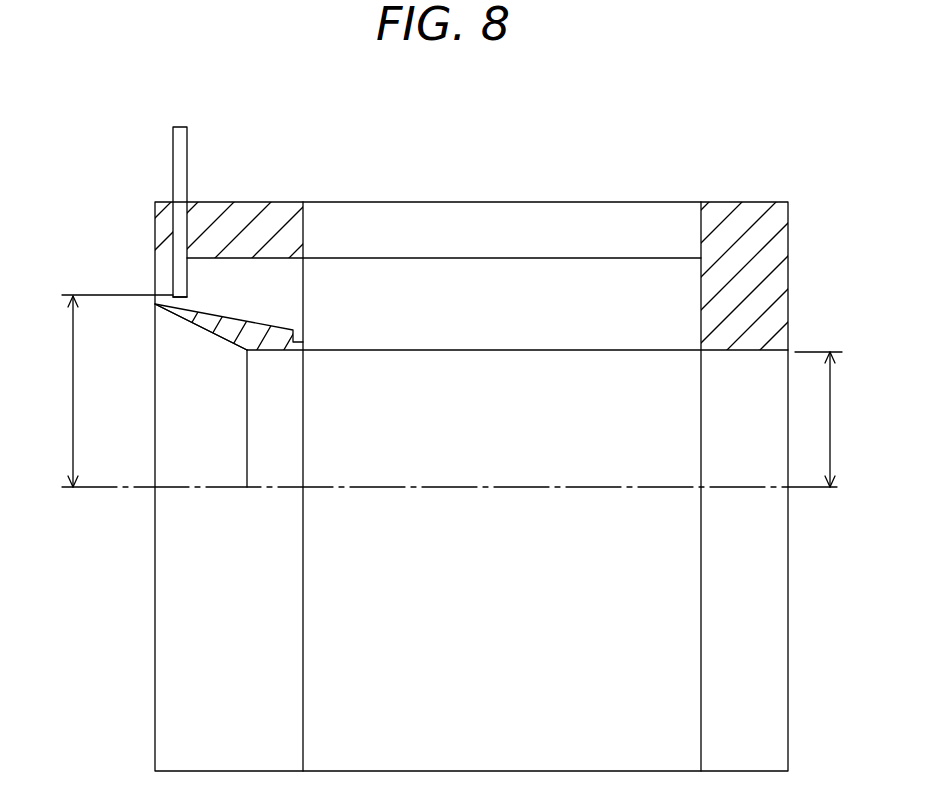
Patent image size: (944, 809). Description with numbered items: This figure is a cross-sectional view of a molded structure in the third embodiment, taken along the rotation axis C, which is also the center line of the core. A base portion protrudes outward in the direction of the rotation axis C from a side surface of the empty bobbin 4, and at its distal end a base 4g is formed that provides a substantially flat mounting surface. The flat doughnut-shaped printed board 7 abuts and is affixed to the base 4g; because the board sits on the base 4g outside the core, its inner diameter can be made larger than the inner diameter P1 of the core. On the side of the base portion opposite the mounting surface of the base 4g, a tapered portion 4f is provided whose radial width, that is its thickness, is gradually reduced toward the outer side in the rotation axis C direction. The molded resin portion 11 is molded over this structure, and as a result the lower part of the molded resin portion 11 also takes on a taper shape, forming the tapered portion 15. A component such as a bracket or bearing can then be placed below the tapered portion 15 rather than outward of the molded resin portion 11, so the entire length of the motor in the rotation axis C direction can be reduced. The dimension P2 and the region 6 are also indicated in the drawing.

The empty bobbin 4 is at (257, 262).
The tapered portion 4f is at (228, 318).
The base 4g is at (178, 297).
The cylinder bore 6 is at (487, 212).
The printed board 7 is at (172, 130).
The molded resin portion 11 is at (222, 210).
The tapered portion 15 is at (222, 318).
The rotation axis C is at (473, 489).
The inner diameter of the core P1 is at (830, 419).
The dimension P2 is at (103, 391).